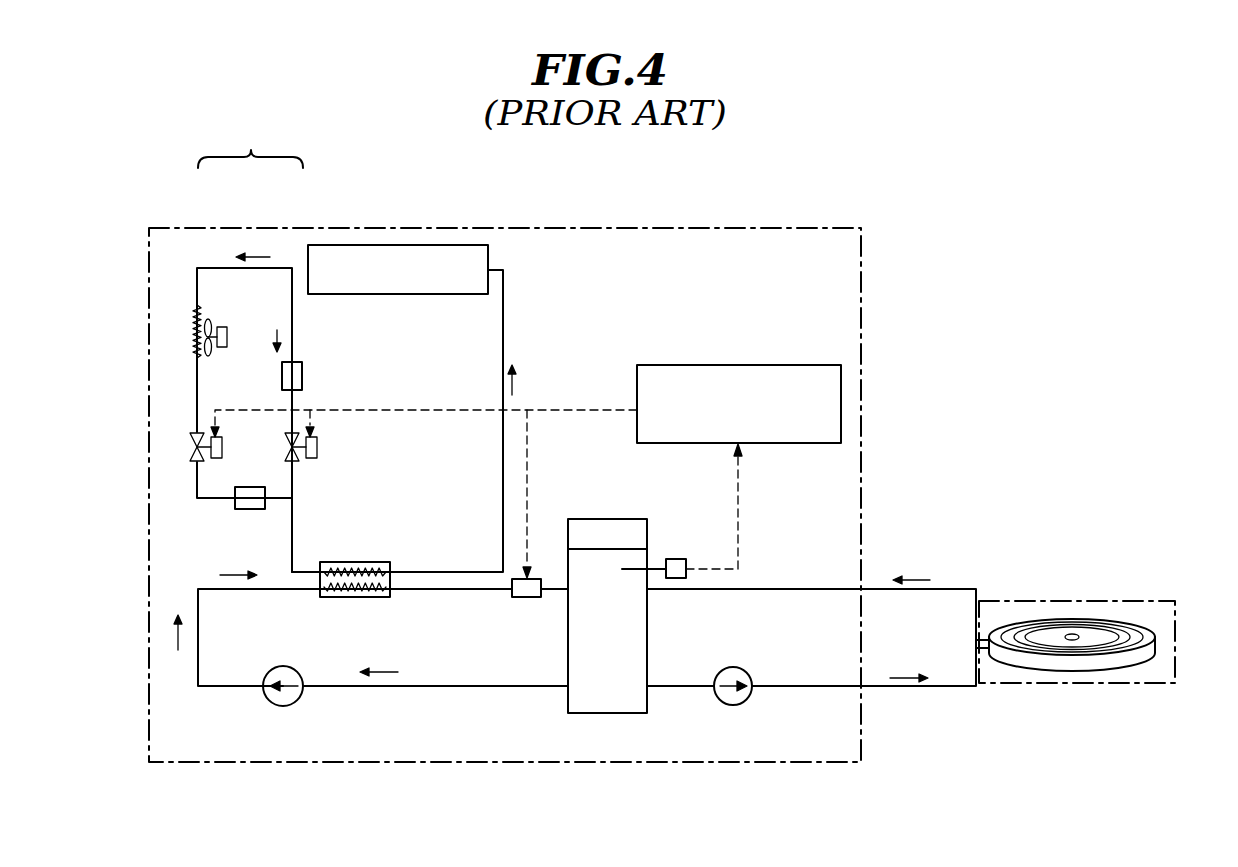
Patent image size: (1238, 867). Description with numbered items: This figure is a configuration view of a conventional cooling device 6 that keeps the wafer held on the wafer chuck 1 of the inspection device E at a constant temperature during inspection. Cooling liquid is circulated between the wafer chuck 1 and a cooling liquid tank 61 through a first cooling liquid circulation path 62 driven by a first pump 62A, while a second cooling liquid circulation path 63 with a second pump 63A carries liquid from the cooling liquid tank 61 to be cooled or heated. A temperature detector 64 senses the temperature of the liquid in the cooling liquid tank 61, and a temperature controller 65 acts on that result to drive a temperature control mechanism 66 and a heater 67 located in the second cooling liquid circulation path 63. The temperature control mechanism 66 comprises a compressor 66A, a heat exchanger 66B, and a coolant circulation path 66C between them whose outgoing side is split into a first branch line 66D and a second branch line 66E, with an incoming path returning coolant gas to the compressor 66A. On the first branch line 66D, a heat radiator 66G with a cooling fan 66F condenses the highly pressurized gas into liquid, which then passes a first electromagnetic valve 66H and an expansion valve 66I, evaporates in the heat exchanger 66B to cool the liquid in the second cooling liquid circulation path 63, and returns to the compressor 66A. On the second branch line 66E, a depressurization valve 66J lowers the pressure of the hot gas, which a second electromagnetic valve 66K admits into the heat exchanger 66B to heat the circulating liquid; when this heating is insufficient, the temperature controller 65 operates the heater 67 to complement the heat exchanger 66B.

The wafer chuck 1 is at (1072, 634).
The cooling device 6 is at (861, 333).
The cooling liquid tank 61 is at (605, 692).
The first cooling liquid circulation path 62 is at (680, 690).
The first pump 62A is at (738, 705).
The second cooling liquid circulation path 63 is at (514, 690).
The second pump 63A is at (285, 706).
The temperature detector 64 is at (676, 559).
The temperature controller 65 is at (750, 365).
The temperature control mechanism 66 is at (505, 338).
The compressor 66A is at (400, 294).
The heat exchanger 66B is at (360, 563).
The coolant circulation path 66C is at (250, 143).
The first branch line 66D is at (207, 268).
The second branch line 66E is at (290, 305).
The cooling fan 66F is at (213, 312).
The heat radiator 66G is at (196, 340).
The first electromagnetic valve 66H is at (190, 448).
The expansion valve 66I is at (248, 509).
The depressurization valve 66J is at (302, 376).
The second electromagnetic valve 66K is at (318, 448).
The heater 67 is at (526, 597).
The inspection device E is at (1175, 625).